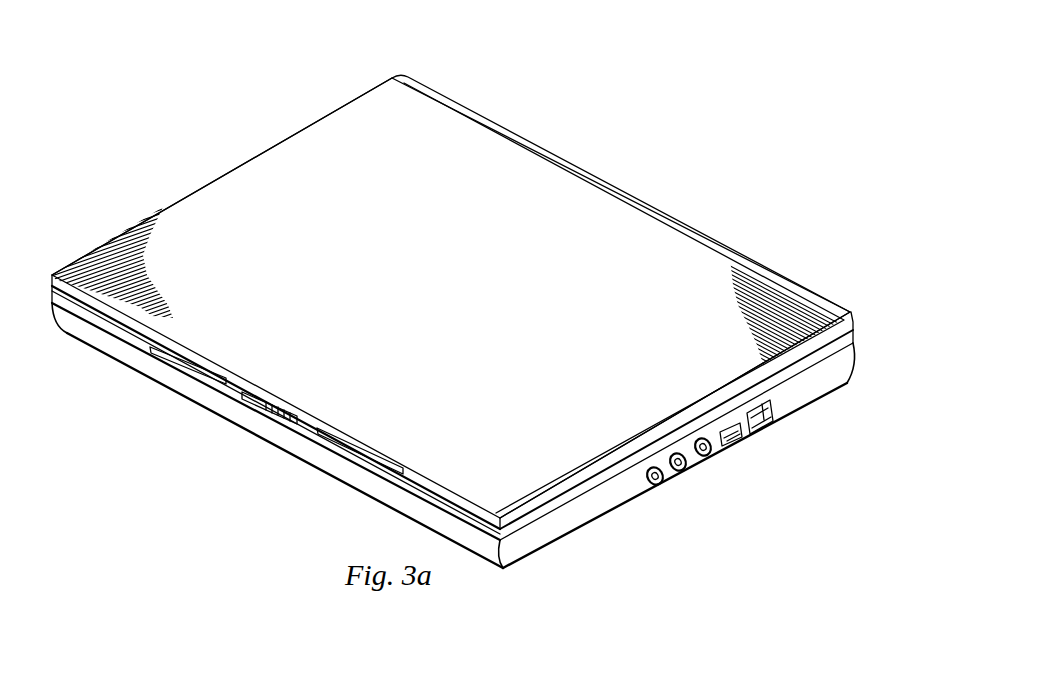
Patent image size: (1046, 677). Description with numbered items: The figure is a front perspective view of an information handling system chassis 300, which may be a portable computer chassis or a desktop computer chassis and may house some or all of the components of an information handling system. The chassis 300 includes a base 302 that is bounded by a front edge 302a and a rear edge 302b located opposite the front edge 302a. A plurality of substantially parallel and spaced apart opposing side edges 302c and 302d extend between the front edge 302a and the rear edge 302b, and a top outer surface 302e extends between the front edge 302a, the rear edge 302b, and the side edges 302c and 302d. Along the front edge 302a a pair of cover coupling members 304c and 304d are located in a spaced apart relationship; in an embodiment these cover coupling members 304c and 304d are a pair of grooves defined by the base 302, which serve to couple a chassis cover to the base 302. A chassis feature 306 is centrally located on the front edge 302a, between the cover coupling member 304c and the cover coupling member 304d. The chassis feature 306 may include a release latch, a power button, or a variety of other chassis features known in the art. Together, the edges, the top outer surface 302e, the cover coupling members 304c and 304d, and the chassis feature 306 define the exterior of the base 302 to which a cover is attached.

The information handling system chassis 300 is at (690, 46).
The base 302 is at (540, 139).
The front edge 302a is at (307, 430).
The rear edge 302b is at (618, 184).
The side edge 302c is at (220, 171).
The side edge 302d is at (562, 493).
The top outer surface 302e is at (317, 133).
The cover coupling member 304c is at (150, 350).
The cover coupling member 304d is at (397, 477).
The chassis feature 306 is at (270, 418).